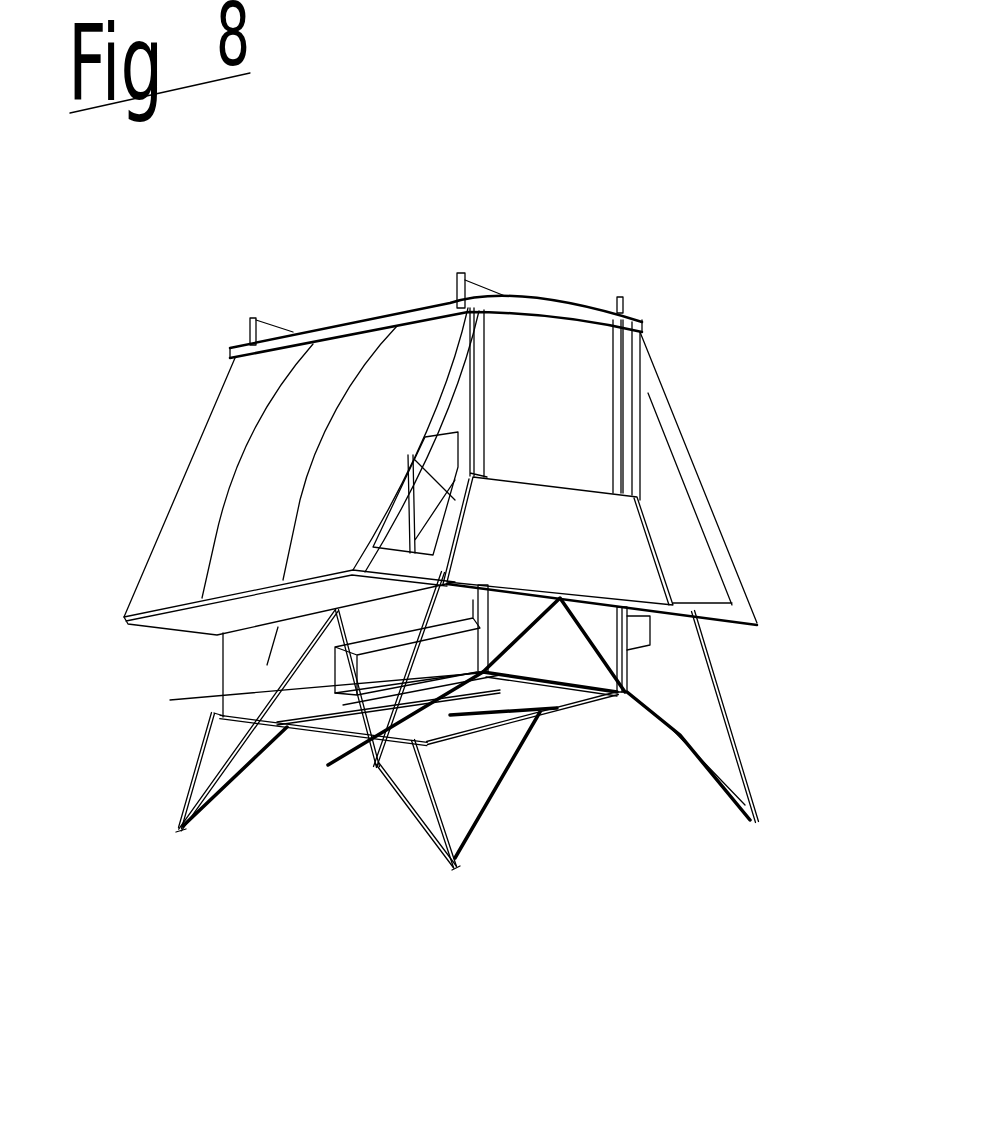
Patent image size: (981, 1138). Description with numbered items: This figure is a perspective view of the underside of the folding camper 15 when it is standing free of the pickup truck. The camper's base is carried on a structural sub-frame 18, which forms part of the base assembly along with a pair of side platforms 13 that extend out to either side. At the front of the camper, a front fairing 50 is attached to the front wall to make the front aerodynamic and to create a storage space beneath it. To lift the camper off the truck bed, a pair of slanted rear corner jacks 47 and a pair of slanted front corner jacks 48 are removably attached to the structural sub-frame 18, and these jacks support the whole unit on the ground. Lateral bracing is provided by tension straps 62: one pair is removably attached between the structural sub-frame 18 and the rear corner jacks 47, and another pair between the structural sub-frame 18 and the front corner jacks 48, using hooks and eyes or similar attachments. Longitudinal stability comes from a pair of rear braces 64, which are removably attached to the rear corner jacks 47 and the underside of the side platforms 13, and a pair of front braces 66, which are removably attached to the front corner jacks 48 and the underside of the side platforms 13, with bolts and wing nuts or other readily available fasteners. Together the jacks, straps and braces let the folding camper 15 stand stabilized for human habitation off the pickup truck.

The side platforms 13 is at (267, 665).
The folding camper 15 is at (718, 322).
The structural sub-frame 18 is at (570, 683).
The rear corner jacks 47 is at (172, 828).
The front corner jacks 48 is at (378, 767).
The front fairing 50 is at (577, 540).
The tension straps 62 is at (233, 780).
The rear braces 64 is at (548, 905).
The front braces 66 is at (363, 712).